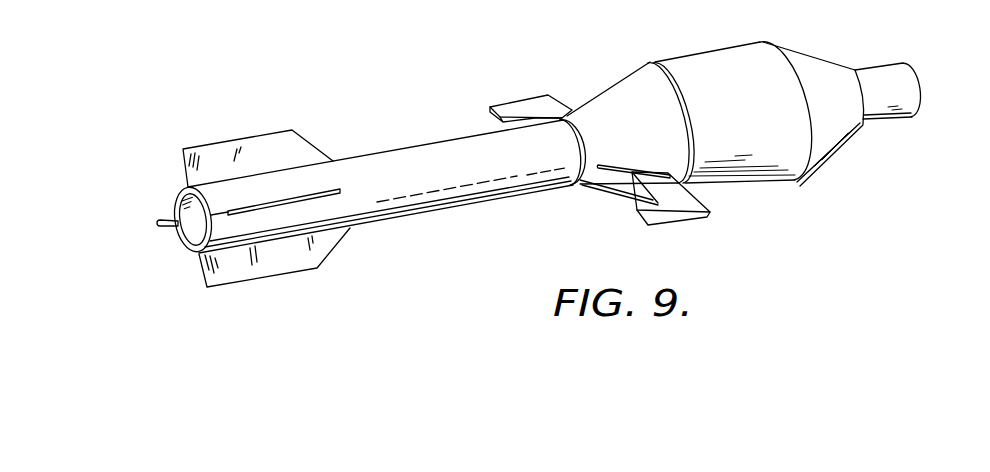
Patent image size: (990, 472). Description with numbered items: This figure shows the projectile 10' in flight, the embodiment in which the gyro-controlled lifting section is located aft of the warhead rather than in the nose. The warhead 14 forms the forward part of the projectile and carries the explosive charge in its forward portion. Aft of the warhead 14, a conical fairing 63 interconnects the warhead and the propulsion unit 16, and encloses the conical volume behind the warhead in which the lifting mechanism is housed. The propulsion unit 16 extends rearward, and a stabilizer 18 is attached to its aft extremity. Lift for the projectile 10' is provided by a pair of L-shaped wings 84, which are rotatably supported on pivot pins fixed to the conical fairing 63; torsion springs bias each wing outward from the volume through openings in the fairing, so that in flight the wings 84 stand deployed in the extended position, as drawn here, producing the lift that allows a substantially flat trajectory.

The projectile 10' is at (231, 76).
The warhead 14 is at (767, 72).
The propulsion unit 16 is at (473, 196).
The stabilizer 18 is at (184, 167).
The conical fairing 63 is at (640, 83).
The L-shaped wings 84 is at (542, 96).